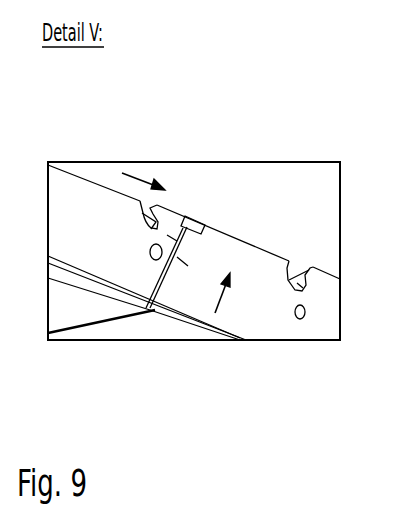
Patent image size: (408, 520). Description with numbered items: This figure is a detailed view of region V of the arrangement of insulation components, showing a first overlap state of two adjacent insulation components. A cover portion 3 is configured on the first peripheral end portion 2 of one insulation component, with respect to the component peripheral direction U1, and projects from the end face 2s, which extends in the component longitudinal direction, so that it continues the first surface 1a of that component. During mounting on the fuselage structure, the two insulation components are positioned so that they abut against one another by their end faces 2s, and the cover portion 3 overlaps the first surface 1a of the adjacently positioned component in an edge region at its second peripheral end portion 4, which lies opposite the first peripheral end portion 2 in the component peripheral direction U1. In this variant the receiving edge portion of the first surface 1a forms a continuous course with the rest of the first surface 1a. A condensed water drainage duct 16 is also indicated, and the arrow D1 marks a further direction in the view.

The first surface 1a is at (93, 178).
The first peripheral end portion 2 is at (117, 253).
The end face 2s is at (167, 235).
The cover portion 3 is at (188, 224).
The second peripheral end portion 4 is at (193, 290).
The condensed water drainage duct 16 is at (156, 260).
The component peripheral direction U1 is at (138, 179).
The direction of rotation D1 is at (221, 298).